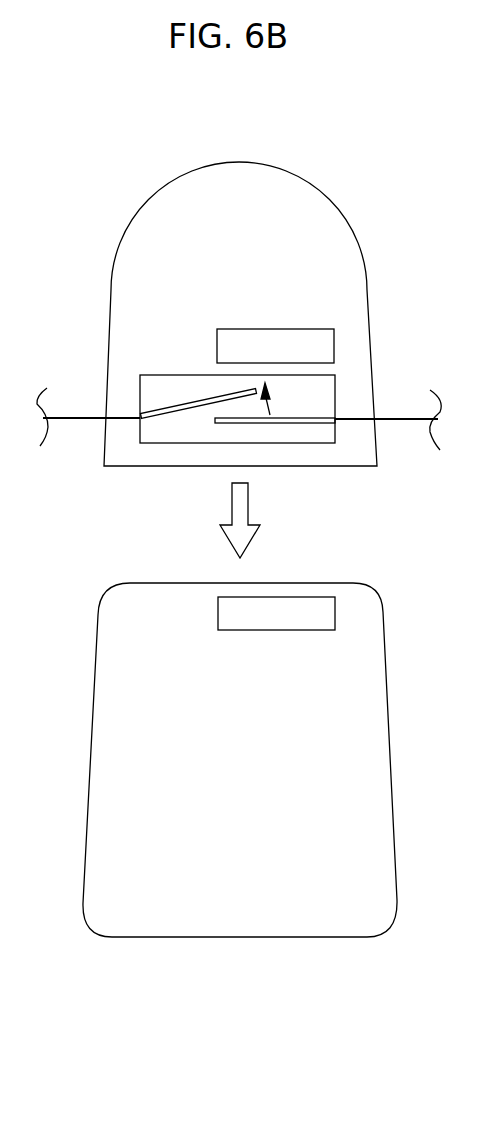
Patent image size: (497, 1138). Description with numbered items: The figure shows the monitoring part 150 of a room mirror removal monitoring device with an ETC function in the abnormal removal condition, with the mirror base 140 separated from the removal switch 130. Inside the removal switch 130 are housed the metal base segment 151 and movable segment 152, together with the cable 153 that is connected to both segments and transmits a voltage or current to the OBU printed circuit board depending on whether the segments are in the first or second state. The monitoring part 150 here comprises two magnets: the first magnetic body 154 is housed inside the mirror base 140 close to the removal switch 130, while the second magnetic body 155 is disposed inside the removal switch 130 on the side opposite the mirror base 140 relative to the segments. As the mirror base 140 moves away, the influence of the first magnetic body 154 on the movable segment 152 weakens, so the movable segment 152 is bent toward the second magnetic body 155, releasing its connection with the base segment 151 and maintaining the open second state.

The removal switch 130 is at (363, 113).
The mirror base 140 is at (240, 937).
The monitoring part 150 is at (242, 664).
The base segment 151 is at (302, 424).
The movable segment 152 is at (198, 400).
The cable 153 is at (397, 418).
The first magnetic body 154 is at (277, 630).
The second magnetic body 155 is at (277, 328).